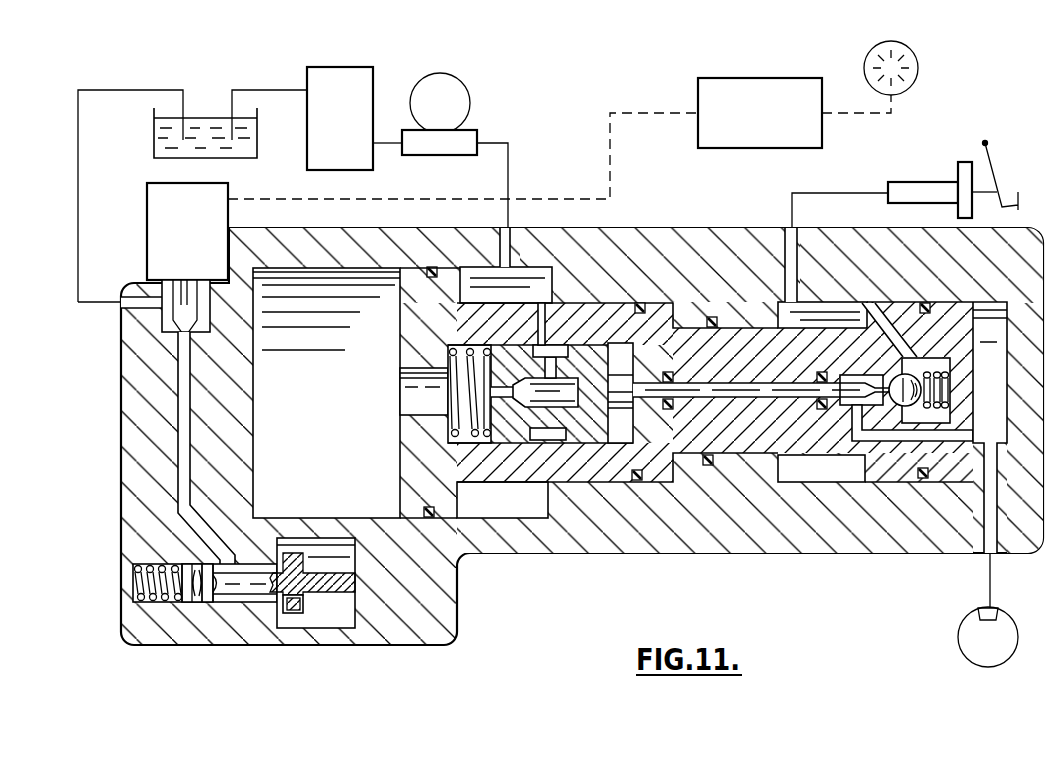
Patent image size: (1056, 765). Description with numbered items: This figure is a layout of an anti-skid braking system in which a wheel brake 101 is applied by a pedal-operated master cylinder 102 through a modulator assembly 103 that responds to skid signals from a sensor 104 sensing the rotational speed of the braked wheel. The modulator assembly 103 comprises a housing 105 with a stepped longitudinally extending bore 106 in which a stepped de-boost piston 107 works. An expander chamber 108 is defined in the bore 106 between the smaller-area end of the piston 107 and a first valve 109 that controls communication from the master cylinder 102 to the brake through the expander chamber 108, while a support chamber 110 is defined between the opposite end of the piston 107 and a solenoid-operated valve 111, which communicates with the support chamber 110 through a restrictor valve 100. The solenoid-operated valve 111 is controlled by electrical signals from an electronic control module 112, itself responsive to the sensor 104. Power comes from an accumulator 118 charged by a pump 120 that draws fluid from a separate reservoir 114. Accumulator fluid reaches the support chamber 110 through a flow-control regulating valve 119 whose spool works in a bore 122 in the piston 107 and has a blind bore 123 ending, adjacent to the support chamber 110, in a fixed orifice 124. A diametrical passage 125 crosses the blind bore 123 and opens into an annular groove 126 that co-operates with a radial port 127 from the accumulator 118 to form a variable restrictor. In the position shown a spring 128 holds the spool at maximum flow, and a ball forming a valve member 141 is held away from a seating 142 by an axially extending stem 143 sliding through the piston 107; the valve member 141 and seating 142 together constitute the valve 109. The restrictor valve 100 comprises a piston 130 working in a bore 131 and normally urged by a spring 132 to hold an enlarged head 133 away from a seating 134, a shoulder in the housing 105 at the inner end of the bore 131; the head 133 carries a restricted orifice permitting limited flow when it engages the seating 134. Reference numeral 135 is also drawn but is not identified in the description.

The restrictor valve 100 is at (258, 583).
The wheel brake 101 is at (962, 618).
The pedal-operated master cylinder 102 is at (908, 185).
The modulator assembly 103 is at (768, 240).
The sensor 104 is at (913, 83).
The housing 105 is at (703, 257).
The stepped longitudinally extending bore 106 is at (620, 480).
The stepped de-boost piston 107 is at (692, 443).
The expander chamber 108 is at (990, 400).
The first valve 109 is at (893, 400).
The support chamber 110 is at (338, 406).
The solenoid-operated valve 111 is at (170, 222).
The electronic control module 112 is at (740, 108).
The reservoir 114 is at (243, 143).
The accumulator 118 is at (447, 117).
The flow-control regulating valve 119 is at (582, 423).
The pump 120 is at (350, 93).
The bore 122 is at (467, 443).
The blind bore 123 is at (545, 407).
The fixed orifice 124 is at (507, 443).
The diametrical passage 125 is at (553, 360).
The annular groove 126 is at (578, 380).
The radial port 127 is at (545, 305).
The spring 128 is at (475, 350).
The piston 130 is at (206, 598).
The bore 131 is at (158, 600).
The spring 132 is at (140, 600).
The enlarged head 133 is at (295, 610).
The seating 134 is at (277, 628).
The screw 135 is at (303, 597).
The valve member 141 is at (907, 407).
The seating 142 is at (873, 417).
The axially extending stem 143 is at (735, 443).